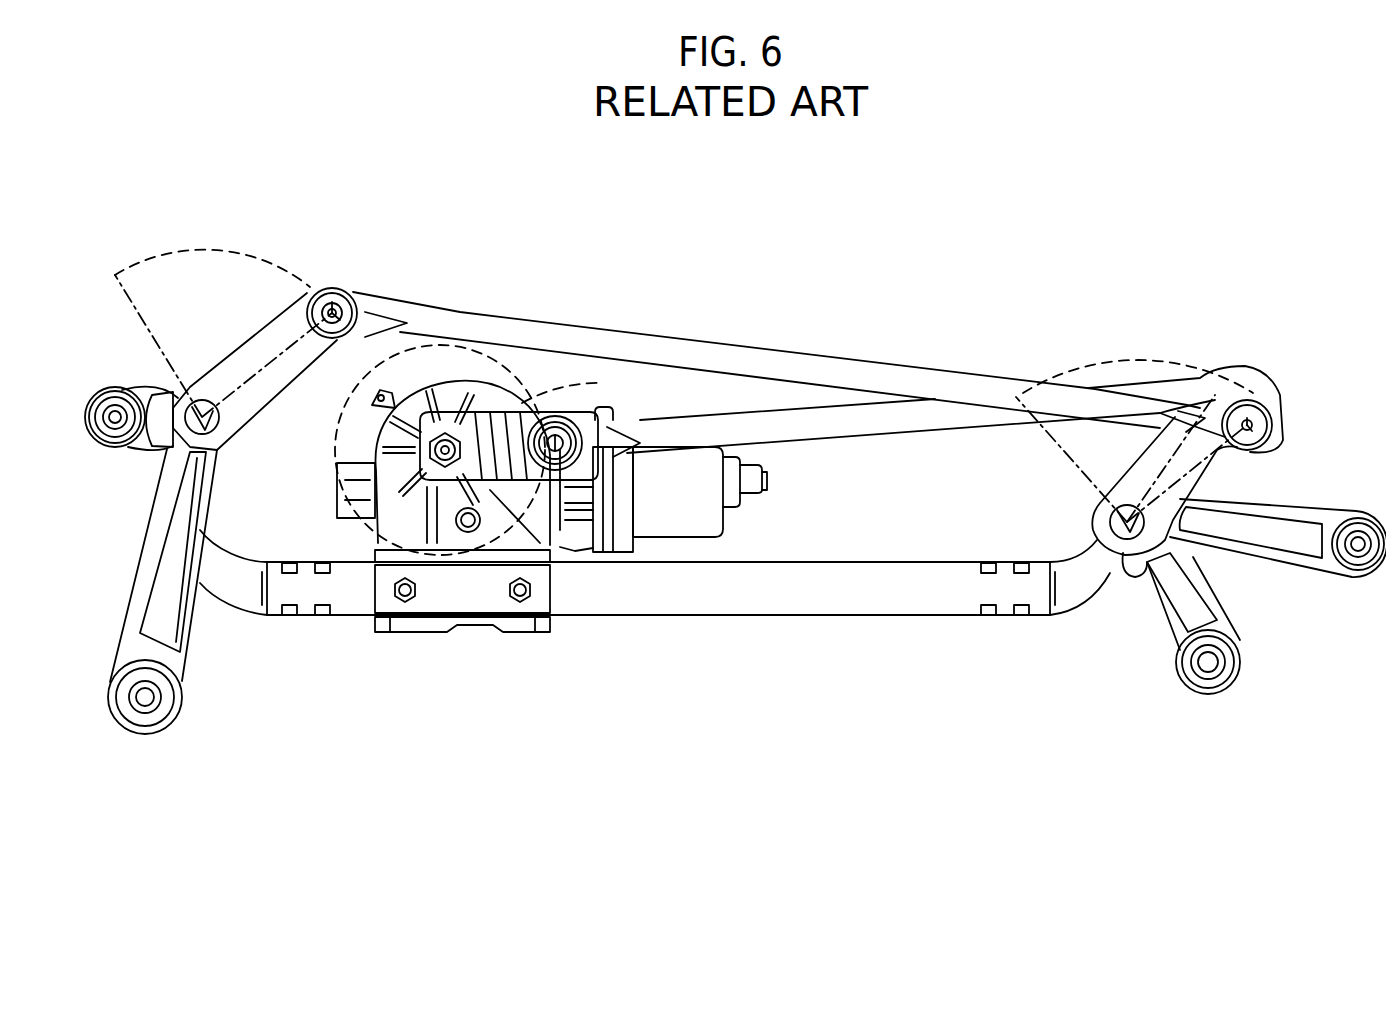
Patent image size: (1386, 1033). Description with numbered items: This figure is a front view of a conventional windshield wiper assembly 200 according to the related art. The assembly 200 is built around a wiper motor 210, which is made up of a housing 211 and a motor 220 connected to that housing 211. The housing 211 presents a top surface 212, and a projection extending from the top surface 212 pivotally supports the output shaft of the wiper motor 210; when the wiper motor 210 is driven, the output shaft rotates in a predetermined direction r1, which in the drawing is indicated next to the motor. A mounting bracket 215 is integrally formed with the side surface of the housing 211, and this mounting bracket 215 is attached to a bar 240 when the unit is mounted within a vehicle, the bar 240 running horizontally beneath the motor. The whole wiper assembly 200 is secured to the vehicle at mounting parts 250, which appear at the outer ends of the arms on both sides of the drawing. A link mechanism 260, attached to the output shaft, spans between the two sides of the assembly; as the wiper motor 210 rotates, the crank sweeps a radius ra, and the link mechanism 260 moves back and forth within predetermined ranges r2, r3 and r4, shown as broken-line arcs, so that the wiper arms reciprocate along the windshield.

The windshield wiper assembly 200 is at (399, 173).
The wiper motor 210 is at (577, 447).
The housing 211 is at (365, 437).
The top surface 212 is at (450, 402).
The mounting bracket 215 is at (517, 628).
The motor 220 is at (698, 510).
The frame pipe 240 is at (770, 597).
The mounting parts 250 is at (130, 448).
The link mechanism 260 is at (701, 311).
The rotation radius of crank arm ra is at (448, 447).
The predetermined direction r1 is at (578, 386).
The predetermined range r2 is at (267, 262).
The predetermined range r3 is at (1190, 488).
The predetermined range r4 is at (1050, 452).